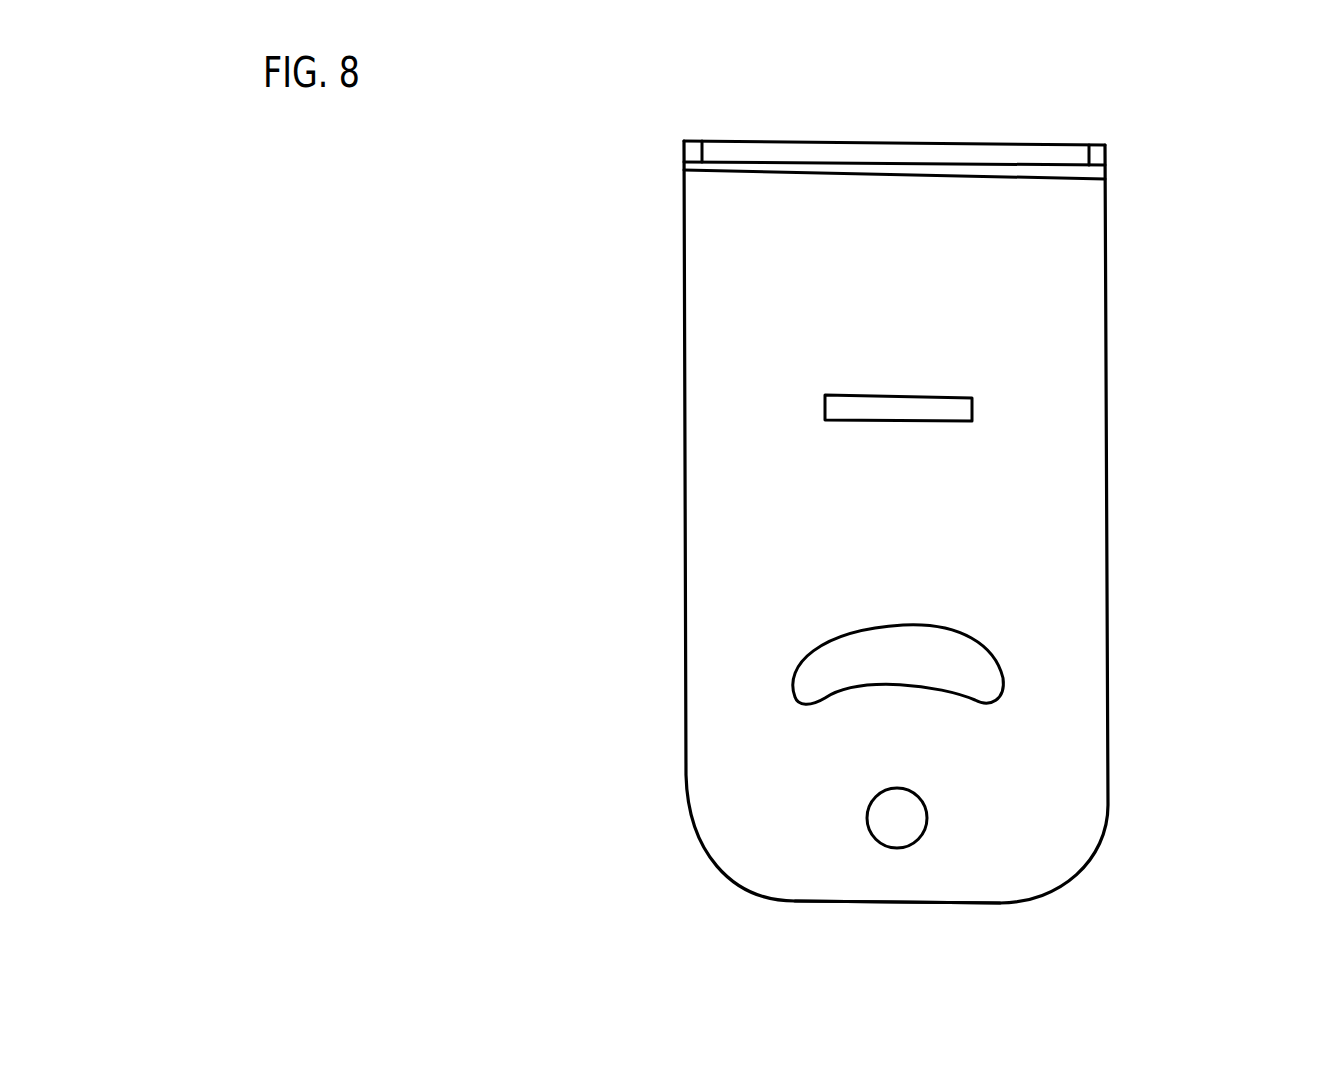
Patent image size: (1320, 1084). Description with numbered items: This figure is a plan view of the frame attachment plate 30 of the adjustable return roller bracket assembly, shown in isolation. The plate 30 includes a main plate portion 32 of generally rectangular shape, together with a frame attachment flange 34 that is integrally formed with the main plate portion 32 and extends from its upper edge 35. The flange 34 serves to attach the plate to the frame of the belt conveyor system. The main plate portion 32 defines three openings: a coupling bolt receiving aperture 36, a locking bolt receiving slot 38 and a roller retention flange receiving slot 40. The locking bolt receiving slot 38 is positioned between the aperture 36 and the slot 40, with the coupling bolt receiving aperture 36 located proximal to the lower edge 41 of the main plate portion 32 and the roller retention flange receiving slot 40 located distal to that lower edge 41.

The frame attachment plate 30 is at (570, 233).
The main plate portion 32 is at (1028, 340).
The frame attachment flange 34 is at (912, 158).
The upper edge 35 is at (1107, 155).
The coupling bolt receiving aperture 36 is at (903, 825).
The locking bolt receiving slot 38 is at (967, 673).
The roller retention flange receiving slot 40 is at (845, 405).
The lower edge 41 is at (900, 901).